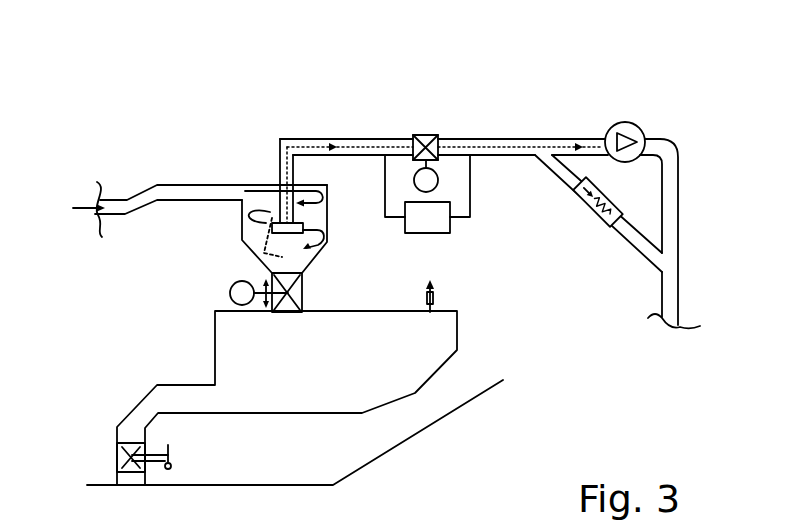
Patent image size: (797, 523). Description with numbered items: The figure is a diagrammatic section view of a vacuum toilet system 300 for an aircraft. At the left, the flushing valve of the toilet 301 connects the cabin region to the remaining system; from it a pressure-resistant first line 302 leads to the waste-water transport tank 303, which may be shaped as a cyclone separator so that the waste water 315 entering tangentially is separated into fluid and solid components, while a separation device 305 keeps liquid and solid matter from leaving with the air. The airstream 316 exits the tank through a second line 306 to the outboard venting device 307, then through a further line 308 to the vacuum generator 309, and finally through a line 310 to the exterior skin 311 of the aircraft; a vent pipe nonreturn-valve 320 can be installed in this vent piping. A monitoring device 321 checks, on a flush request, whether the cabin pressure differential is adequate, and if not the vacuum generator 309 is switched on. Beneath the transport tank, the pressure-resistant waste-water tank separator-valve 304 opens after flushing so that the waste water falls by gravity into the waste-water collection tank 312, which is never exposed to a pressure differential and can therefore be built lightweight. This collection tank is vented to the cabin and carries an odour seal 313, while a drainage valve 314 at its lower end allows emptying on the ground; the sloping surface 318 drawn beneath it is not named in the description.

The vacuum toilet system 300 is at (97, 80).
The flushing valve of the toilet 301 is at (86, 183).
The first line 302 is at (137, 190).
The waste-water transport tank 303 is at (253, 166).
The waste-water tank separator-valve 304 is at (245, 281).
The separation device 305 is at (306, 249).
The second line 306 is at (358, 139).
The outboard venting device 307 is at (427, 135).
The further line 308 is at (535, 139).
The vacuum generator 309 is at (625, 122).
The line 310 is at (680, 195).
The exterior skin 311 is at (670, 328).
The waste-water collection tank 312 is at (213, 352).
The odour seal 313 is at (435, 298).
The drainage valve 314 is at (118, 455).
The waste water 315 is at (320, 197).
The airstream 316 is at (303, 146).
The floor ramp 318 is at (424, 431).
The vent pipe nonreturn-valve 320 is at (588, 213).
The monitoring device 321 is at (452, 234).